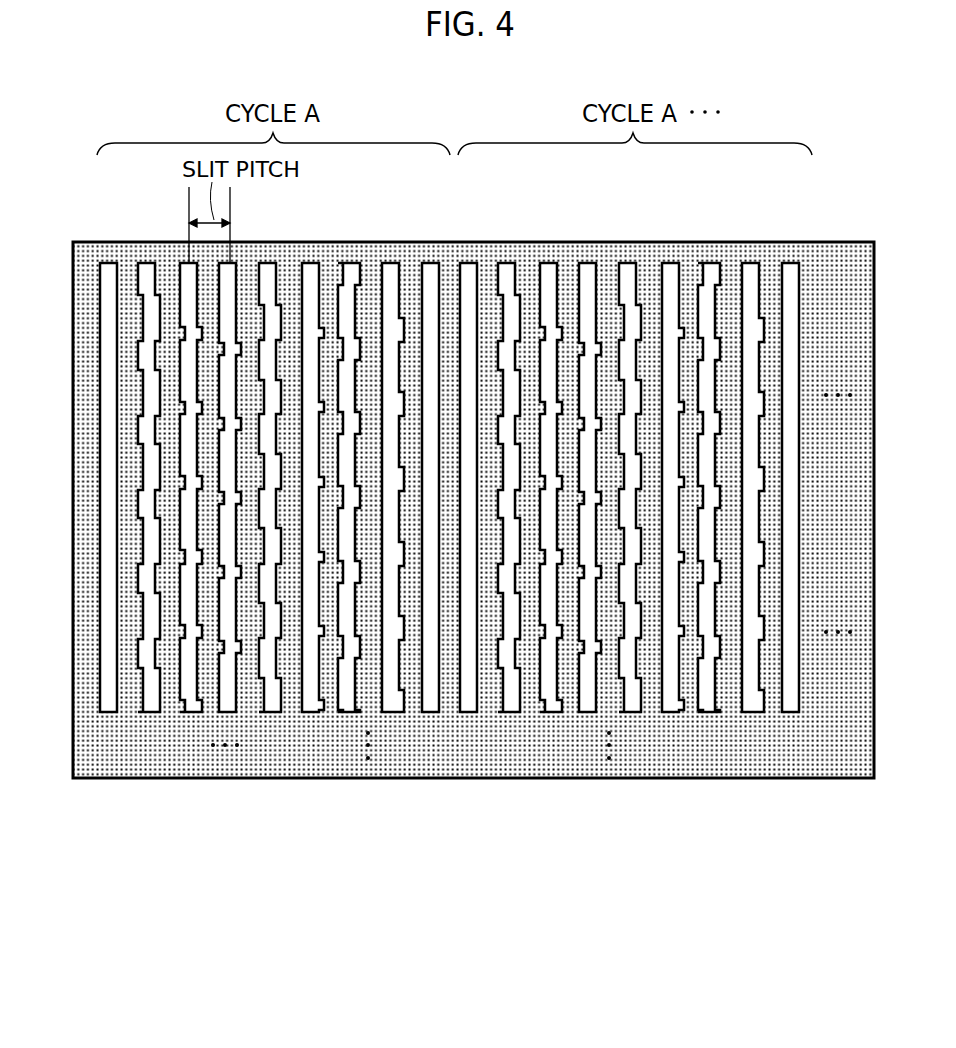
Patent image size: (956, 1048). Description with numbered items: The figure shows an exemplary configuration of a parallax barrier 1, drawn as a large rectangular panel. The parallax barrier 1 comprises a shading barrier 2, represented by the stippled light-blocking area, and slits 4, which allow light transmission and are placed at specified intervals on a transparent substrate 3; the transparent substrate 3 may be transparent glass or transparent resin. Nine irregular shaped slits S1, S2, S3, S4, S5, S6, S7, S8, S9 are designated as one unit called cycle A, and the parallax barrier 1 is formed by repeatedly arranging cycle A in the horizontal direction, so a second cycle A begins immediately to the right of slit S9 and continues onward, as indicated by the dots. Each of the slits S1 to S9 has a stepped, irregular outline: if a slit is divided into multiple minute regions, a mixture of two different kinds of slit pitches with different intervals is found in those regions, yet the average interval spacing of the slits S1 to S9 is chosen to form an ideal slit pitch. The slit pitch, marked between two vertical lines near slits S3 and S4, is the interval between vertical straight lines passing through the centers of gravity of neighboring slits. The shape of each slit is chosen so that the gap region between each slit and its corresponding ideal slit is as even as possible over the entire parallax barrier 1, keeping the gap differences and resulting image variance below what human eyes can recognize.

The parallax barrier 1 is at (452, 547).
The shading barrier 2 is at (452, 510).
The transparent substrate 3 is at (68, 428).
The slits 4 is at (423, 520).
The slit S1 is at (104, 262).
The slit S2 is at (146, 262).
The slit S3 is at (188, 262).
The slit S4 is at (230, 262).
The slit S5 is at (270, 262).
The slit S6 is at (312, 262).
The slit S7 is at (352, 262).
The slit S8 is at (392, 262).
The slit S9 is at (432, 262).